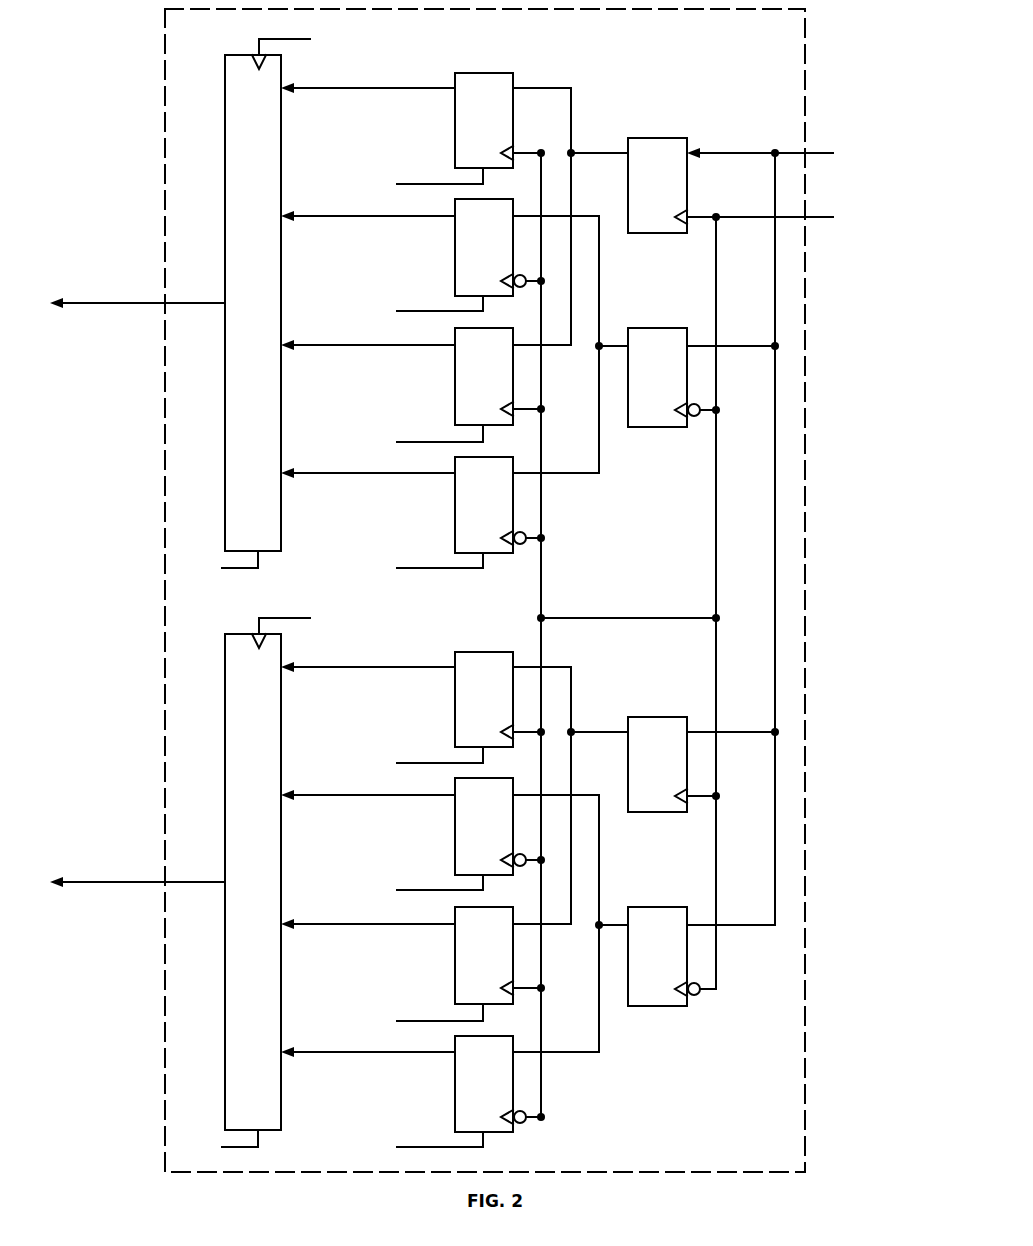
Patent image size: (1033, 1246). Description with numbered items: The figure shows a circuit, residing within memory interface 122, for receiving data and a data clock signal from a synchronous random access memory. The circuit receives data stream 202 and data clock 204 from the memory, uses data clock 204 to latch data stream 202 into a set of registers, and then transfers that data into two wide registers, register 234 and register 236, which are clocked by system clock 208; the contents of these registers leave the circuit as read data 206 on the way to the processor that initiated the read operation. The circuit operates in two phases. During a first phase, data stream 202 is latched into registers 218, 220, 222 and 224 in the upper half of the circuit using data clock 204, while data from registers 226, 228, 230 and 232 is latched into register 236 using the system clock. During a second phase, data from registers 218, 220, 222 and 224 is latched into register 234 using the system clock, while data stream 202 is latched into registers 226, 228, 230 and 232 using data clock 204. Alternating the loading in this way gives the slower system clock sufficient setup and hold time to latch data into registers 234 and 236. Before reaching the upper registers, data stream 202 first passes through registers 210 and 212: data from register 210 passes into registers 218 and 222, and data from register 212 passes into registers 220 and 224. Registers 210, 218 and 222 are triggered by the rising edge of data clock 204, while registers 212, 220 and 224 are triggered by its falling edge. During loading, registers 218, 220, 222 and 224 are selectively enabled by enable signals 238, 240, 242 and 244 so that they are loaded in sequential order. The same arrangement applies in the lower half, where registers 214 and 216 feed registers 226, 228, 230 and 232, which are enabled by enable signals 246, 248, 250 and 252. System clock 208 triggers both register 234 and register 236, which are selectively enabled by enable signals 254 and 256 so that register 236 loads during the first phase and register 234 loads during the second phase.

The memory interface 122 is at (163, 9).
The data stream 202 is at (797, 524).
The data clock 204 is at (717, 635).
The read data 206 is at (137, 616).
The system clock 208 is at (331, 336).
The register 210 is at (657, 185).
The register 212 is at (664, 377).
The register 214 is at (657, 764).
The register 216 is at (664, 956).
The register 218 is at (484, 120).
The register 220 is at (490, 247).
The register 222 is at (484, 376).
The register 224 is at (490, 505).
The register 226 is at (484, 699).
The register 228 is at (490, 826).
The register 230 is at (484, 955).
The register 232 is at (490, 1084).
The register 234 is at (253, 303).
The register 236 is at (253, 882).
The enable signal 238 is at (416, 183).
The enable signal 240 is at (416, 310).
The enable signal 242 is at (416, 440).
The enable signal 244 is at (416, 567).
The enable signal 246 is at (416, 762).
The enable signal 248 is at (416, 889).
The enable signal 250 is at (416, 1019).
The enable signal 252 is at (416, 1146).
The enable signal 254 is at (217, 566).
The enable signal 256 is at (217, 1145).